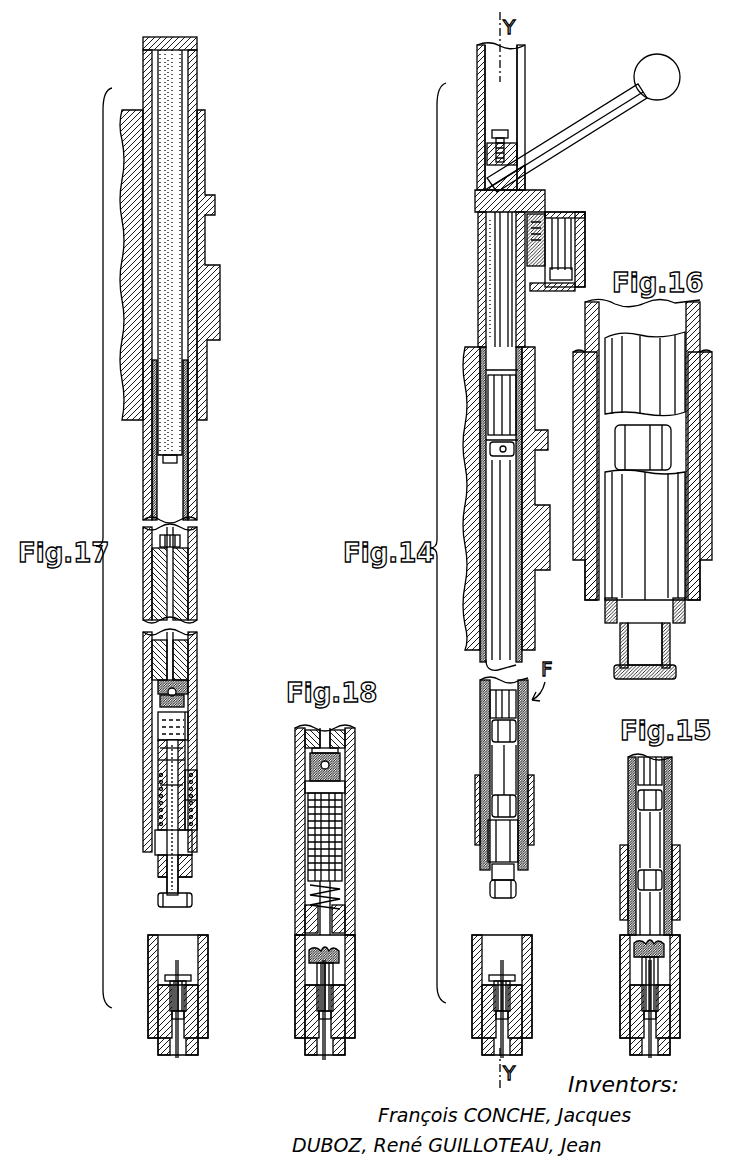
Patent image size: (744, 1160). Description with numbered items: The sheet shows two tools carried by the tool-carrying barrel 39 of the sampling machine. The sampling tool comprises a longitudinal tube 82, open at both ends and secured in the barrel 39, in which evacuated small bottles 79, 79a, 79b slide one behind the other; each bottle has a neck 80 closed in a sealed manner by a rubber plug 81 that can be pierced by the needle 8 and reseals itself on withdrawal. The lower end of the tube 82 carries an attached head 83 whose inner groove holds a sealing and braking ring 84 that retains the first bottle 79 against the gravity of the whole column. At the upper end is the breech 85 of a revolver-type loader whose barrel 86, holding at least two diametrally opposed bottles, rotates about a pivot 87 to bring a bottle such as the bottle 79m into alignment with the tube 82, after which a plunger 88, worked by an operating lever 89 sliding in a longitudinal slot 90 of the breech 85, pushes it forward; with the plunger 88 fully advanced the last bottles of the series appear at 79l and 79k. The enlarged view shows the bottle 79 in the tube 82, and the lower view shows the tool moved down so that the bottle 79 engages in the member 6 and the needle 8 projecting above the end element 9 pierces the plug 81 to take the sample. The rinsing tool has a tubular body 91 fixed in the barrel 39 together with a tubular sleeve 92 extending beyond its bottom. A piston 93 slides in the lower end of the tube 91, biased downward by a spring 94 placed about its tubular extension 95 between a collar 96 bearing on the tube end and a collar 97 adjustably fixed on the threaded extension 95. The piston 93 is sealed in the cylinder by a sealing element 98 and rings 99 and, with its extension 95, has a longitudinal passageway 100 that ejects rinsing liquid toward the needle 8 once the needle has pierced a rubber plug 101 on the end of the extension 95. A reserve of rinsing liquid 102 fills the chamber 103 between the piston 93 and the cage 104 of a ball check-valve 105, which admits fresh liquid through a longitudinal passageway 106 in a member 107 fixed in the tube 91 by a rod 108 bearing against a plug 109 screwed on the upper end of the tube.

In FIG. 17, the member 6 is at (148, 962).
In FIG. 18, the member 6 is at (296, 963).
In FIG. 14, the member 6 is at (474, 962).
In FIG. 15, the member 6 is at (622, 962).
In FIG. 17, the needle 8 is at (172, 1042).
In FIG. 18, the needle 8 is at (320, 1040).
In FIG. 14, the needle 8 is at (500, 1043).
In FIG. 15, the needle 8 is at (648, 1032).
In FIG. 17, the end element 9 is at (172, 992).
In FIG. 18, the end element 9 is at (320, 994).
In FIG. 14, the end element 9 is at (500, 992).
In FIG. 15, the end element 9 is at (648, 986).
In FIG. 17, the tool-carrying barrel 39 is at (205, 284).
In FIG. 14, the tool-carrying barrel 39 is at (535, 505).
In FIG. 14, the small bottle 79 is at (500, 826).
In FIG. 16, the small bottle 79 is at (645, 466).
In FIG. 15, the small bottle 79 is at (646, 906).
In FIG. 14, the small bottle 79a is at (500, 760).
In FIG. 15, the small bottle 79a is at (646, 836).
In FIG. 14, the small bottle 79b is at (500, 712).
In FIG. 15, the small bottle 79b is at (646, 784).
In FIG. 14, the small bottle 79k is at (506, 452).
In FIG. 14, the small bottle 79l is at (500, 406).
In FIG. 14, the small bottle 79m is at (565, 252).
In FIG. 14, the neck 80 is at (496, 872).
In FIG. 16, the neck 80 is at (632, 645).
In FIG. 14, the plug 81 is at (490, 889).
In FIG. 16, the plug 81 is at (618, 673).
In FIG. 14, the longitudinal tube 82 is at (495, 642).
In FIG. 16, the longitudinal tube 82 is at (585, 340).
In FIG. 14, the head 83 is at (478, 794).
In FIG. 14, the sealing and braking ring 84 is at (484, 848).
In FIG. 14, the breech 85 is at (480, 320).
In FIG. 14, the barrel 86 is at (584, 230).
In FIG. 14, the pivot 87 is at (545, 226).
In FIG. 14, the plunger 88 is at (498, 262).
In FIG. 14, the operating lever 89 is at (600, 104).
In FIG. 14, the longitudinal slot 90 is at (520, 85).
In FIG. 17, the tubular body 91 is at (188, 440).
In FIG. 17, the tubular sleeve 92 is at (152, 592).
In FIG. 17, the piston 93 is at (185, 755).
In FIG. 17, the spring 94 is at (197, 802).
In FIG. 17, the tubular extension 95 is at (165, 840).
In FIG. 17, the collar 96 is at (192, 796).
In FIG. 17, the collar 97 is at (160, 868).
In FIG. 17, the sealing element 98 is at (165, 766).
In FIG. 17, the rings 99 is at (160, 749).
In FIG. 17, the longitudinal passageway 100 is at (172, 826).
In FIG. 17, the rubber plug 101 is at (165, 905).
In FIG. 17, the rinsing liquid 102 is at (165, 722).
In FIG. 17, the chamber 103 is at (188, 728).
In FIG. 17, the cage 104 is at (188, 696).
In FIG. 17, the ball check-valve 105 is at (160, 698).
In FIG. 17, the longitudinal passageway 106 is at (170, 640).
In FIG. 17, the member 107 is at (167, 572).
In FIG. 17, the rod 108 is at (170, 362).
In FIG. 17, the plug 109 is at (143, 42).